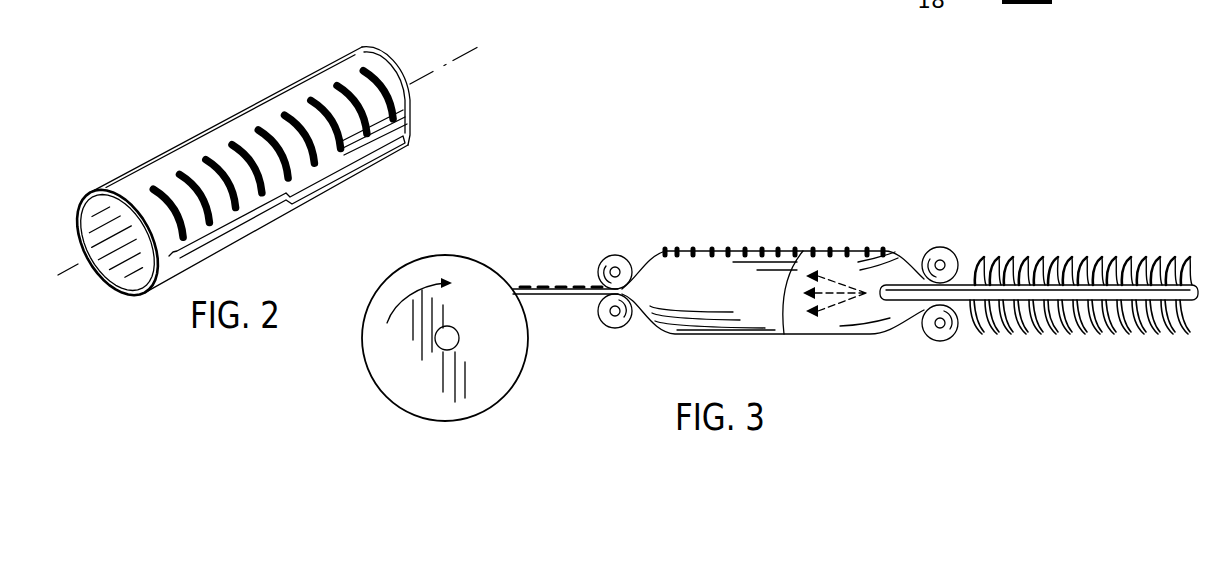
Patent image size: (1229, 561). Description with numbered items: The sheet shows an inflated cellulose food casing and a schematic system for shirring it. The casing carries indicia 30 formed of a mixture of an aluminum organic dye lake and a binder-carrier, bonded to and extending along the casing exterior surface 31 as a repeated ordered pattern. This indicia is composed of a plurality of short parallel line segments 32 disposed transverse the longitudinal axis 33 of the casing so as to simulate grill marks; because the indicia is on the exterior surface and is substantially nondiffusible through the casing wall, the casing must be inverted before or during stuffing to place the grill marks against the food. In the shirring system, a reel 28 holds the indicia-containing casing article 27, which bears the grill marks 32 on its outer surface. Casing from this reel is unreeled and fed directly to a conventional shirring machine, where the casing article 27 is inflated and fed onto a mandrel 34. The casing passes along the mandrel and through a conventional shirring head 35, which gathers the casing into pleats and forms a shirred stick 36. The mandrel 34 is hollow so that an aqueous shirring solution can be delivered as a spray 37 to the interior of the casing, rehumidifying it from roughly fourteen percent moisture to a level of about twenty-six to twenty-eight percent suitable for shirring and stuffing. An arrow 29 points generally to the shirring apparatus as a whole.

In FIG. 3, the casing article 27 is at (549, 296).
In FIG. 3, the reel 28 is at (522, 372).
In FIG. 3, the tube forming apparatus 29 is at (1000, 218).
In FIG. 2, the indicia 30 is at (288, 203).
In FIG. 2, the casing exterior surface 31 is at (352, 62).
In FIG. 2, the short parallel line segments 32 is at (310, 97).
In FIG. 3, the short parallel line segments 32 is at (560, 288).
In FIG. 2, the longitudinal axis 33 is at (452, 61).
In FIG. 3, the mandrel 34 is at (1187, 285).
In FIG. 3, the shirring head 35 is at (934, 249).
In FIG. 3, the shirred stick 36 is at (1060, 257).
In FIG. 3, the spray 37 is at (842, 306).